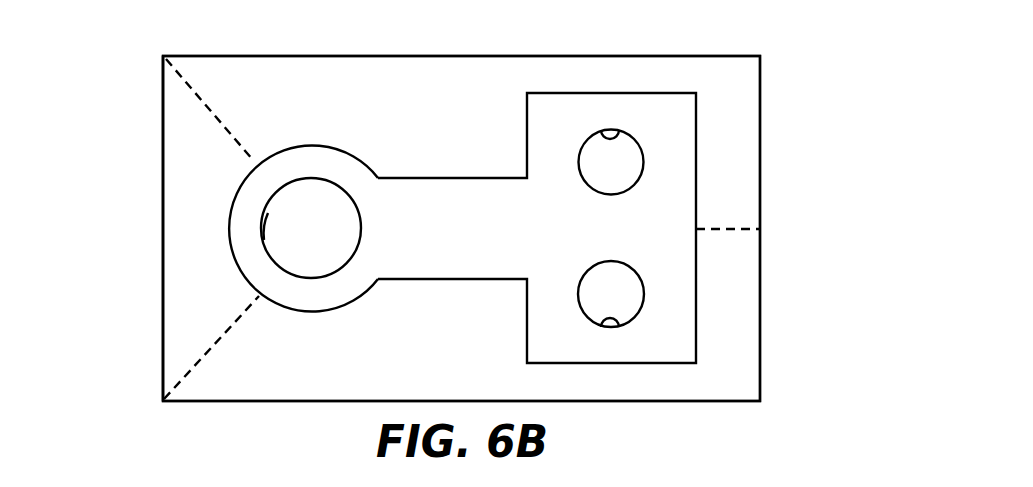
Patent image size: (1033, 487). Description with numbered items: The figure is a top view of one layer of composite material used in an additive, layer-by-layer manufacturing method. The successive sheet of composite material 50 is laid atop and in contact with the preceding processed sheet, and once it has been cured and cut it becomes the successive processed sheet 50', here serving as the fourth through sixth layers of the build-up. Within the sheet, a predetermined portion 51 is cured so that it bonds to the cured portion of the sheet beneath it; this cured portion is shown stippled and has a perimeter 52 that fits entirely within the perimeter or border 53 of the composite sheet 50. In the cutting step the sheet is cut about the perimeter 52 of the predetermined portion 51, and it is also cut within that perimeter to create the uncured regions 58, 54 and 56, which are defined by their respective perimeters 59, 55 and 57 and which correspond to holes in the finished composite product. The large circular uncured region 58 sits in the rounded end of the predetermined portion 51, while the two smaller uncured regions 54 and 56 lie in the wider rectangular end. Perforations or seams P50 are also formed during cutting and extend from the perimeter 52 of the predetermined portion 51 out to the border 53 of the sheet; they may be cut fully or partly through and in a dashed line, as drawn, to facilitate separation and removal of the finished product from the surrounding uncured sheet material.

The successive sheet of composite material 50 is at (414, 228).
The successive processed sheet 50' is at (400, 216).
The predetermined portion 51 is at (246, 257).
The perimeter of the predetermined portion 52 is at (527, 125).
The perimeter or border of the composite sheet 53 is at (163, 218).
The uncured region 54 is at (612, 160).
The perimeter of uncured region 55 is at (599, 130).
The uncured region 56 is at (612, 293).
The perimeter of uncured region 57 is at (598, 328).
The uncured region 58 is at (313, 230).
The perimeter of uncured region 59 is at (265, 230).
The perforation or seam P50 is at (222, 125).